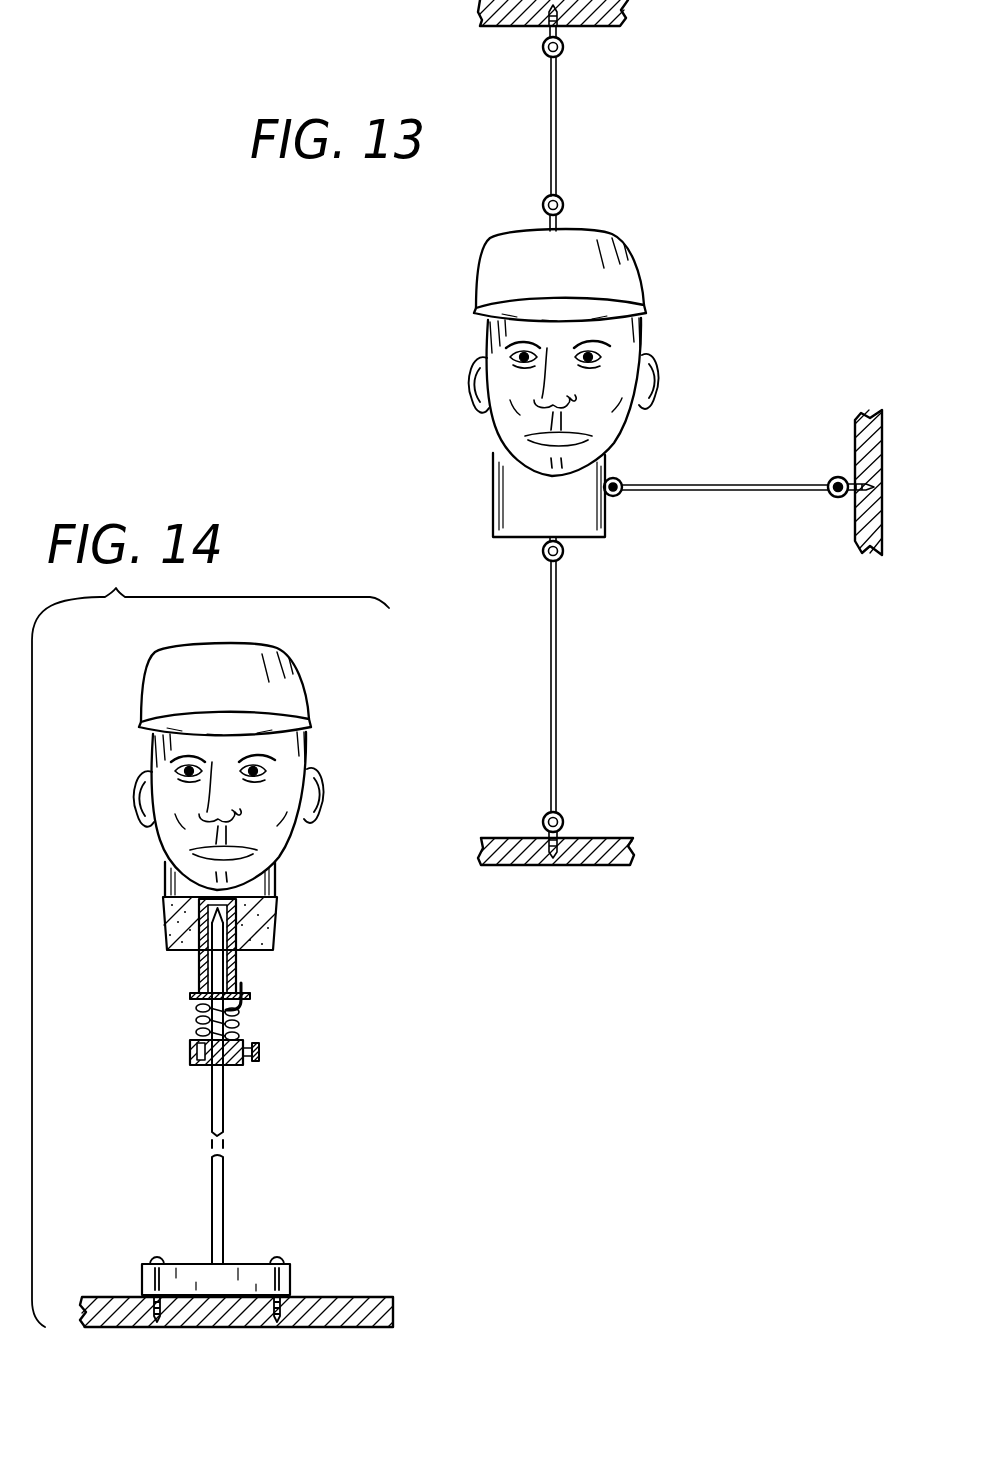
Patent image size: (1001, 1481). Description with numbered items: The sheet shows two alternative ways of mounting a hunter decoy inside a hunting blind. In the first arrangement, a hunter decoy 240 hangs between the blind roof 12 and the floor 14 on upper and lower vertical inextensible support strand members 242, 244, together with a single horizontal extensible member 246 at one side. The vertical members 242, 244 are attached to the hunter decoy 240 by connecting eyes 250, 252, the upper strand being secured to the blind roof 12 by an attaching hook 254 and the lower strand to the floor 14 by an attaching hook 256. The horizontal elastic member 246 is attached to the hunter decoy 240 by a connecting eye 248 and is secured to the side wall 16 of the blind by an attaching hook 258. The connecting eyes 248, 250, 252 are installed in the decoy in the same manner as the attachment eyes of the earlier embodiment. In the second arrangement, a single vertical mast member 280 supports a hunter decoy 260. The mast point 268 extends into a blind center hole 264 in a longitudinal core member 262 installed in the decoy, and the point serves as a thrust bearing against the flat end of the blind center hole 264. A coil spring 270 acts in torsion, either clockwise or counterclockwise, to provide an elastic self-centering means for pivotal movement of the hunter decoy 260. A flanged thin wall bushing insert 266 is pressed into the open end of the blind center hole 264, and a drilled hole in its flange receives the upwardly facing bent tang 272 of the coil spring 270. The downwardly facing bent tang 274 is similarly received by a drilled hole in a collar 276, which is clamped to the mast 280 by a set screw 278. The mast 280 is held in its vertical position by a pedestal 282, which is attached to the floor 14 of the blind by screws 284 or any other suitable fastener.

In FIG. 13, the blind roof 12 is at (592, 27).
In FIG. 13, the floor 14 is at (612, 838).
In FIG. 14, the floor 14 is at (112, 1297).
In FIG. 13, the side wall 16 is at (885, 420).
In FIG. 13, the hunter decoy 240 is at (699, 306).
In FIG. 13, the upper vertical inextensible support strand member 242 is at (556, 135).
In FIG. 13, the lower vertical inextensible support strand member 244 is at (556, 665).
In FIG. 13, the horizontal extensible member 246 is at (710, 492).
In FIG. 13, the connecting eye 248 is at (618, 487).
In FIG. 13, the connecting eye 250 is at (565, 205).
In FIG. 13, the connecting eye 252 is at (562, 556).
In FIG. 13, the attaching hook 254 is at (560, 52).
In FIG. 13, the attaching hook 256 is at (562, 812).
In FIG. 13, the attaching hook 258 is at (830, 482).
In FIG. 14, the hunter decoy 260 is at (98, 721).
In FIG. 14, the longitudinal core member 262 is at (237, 958).
In FIG. 14, the blind center hole 264 is at (200, 957).
In FIG. 14, the flanged thin wall bushing insert 266 is at (195, 996).
In FIG. 14, the mast point 268 is at (210, 897).
In FIG. 14, the coil spring 270 is at (243, 1025).
In FIG. 14, the upwardly facing bent tang 272 is at (243, 986).
In FIG. 14, the downwardly facing bent tang 274 is at (190, 1050).
In FIG. 14, the collar 276 is at (196, 1045).
In FIG. 14, the set screw 278 is at (259, 1055).
In FIG. 14, the vertical mast member 280 is at (224, 1118).
In FIG. 14, the pedestal 282 is at (240, 1264).
In FIG. 14, the screws 284 is at (157, 1258).